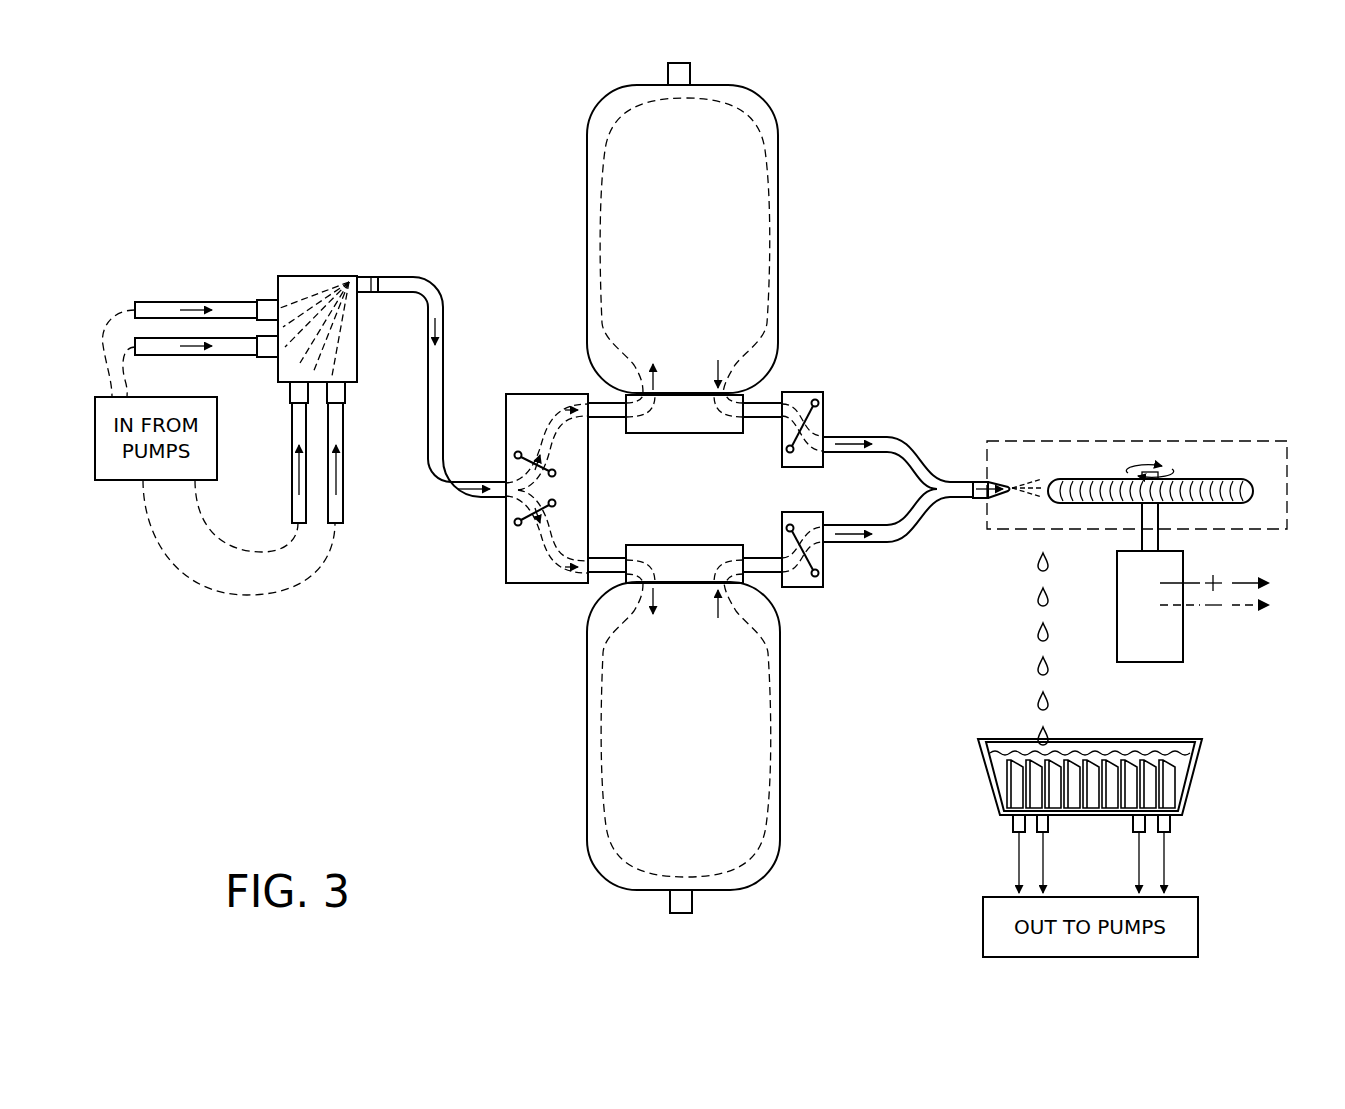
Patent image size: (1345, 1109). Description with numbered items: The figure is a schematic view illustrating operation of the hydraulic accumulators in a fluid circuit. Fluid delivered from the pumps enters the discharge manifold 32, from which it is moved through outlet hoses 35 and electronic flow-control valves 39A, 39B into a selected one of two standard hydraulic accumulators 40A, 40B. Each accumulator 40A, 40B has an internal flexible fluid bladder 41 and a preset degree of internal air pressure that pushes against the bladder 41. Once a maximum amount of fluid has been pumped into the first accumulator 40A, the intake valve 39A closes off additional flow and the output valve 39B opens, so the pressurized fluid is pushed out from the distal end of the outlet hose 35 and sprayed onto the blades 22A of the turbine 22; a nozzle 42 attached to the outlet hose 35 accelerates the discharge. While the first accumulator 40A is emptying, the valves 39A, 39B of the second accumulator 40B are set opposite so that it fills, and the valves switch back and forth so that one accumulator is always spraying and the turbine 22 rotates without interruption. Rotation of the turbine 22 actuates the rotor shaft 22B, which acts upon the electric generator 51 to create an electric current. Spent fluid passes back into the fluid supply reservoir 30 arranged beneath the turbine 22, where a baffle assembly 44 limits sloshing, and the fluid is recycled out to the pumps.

The turbine 22 is at (1260, 472).
The blades 22A is at (1253, 490).
The rotor shaft 22B is at (1158, 515).
The fluid supply reservoir 30 is at (1200, 758).
The discharge manifold 32 is at (325, 272).
The outlet hoses 35 is at (227, 300).
The intake valve 39A is at (530, 570).
The output valve 39B is at (808, 391).
The first hydraulic accumulator 40A is at (617, 93).
The second hydraulic accumulator 40B is at (587, 820).
The internal flexible fluid bladder 41 is at (760, 175).
The nozzle 42 is at (998, 480).
The baffle assembly 44 is at (1157, 777).
The electric generator 51 is at (1123, 618).